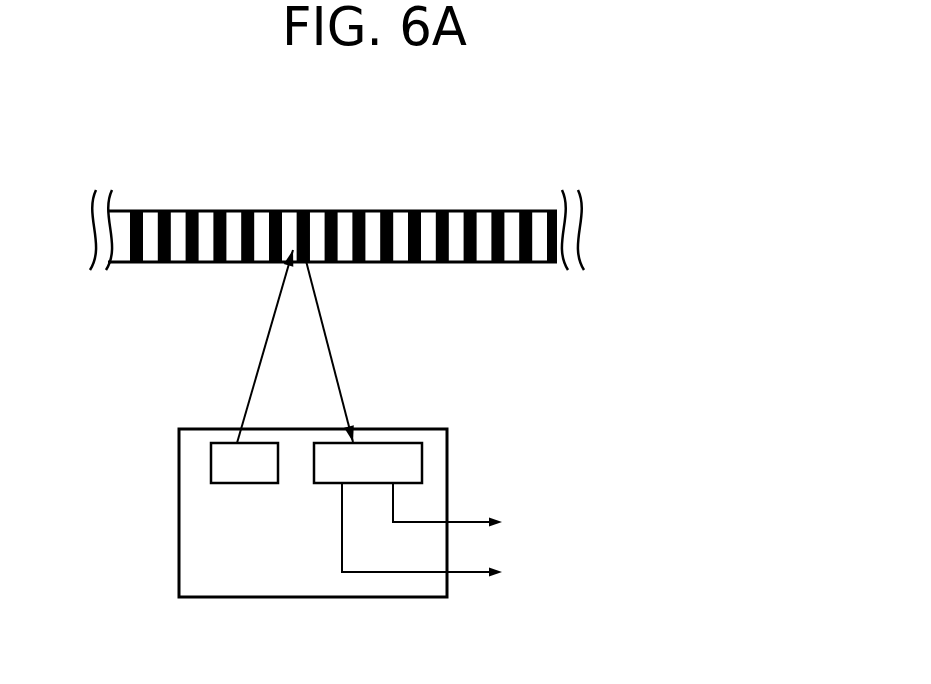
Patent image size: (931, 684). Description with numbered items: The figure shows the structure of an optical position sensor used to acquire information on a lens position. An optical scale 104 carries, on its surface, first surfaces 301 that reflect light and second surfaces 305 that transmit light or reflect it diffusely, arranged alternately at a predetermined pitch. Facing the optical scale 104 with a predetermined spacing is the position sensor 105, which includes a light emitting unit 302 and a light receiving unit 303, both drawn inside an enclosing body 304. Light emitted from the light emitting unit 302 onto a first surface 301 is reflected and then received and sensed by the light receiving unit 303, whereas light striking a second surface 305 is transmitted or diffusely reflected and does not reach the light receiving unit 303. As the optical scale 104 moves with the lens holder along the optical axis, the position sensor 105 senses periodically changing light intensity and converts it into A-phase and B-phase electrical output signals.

The optical scale 104 is at (448, 203).
The first surface 301 is at (300, 248).
The second surface 305 is at (310, 257).
The light emitting unit 302 is at (217, 443).
The light receiving unit 303 is at (408, 443).
The sensor housing 304 is at (179, 532).
The position sensor 105 is at (357, 607).